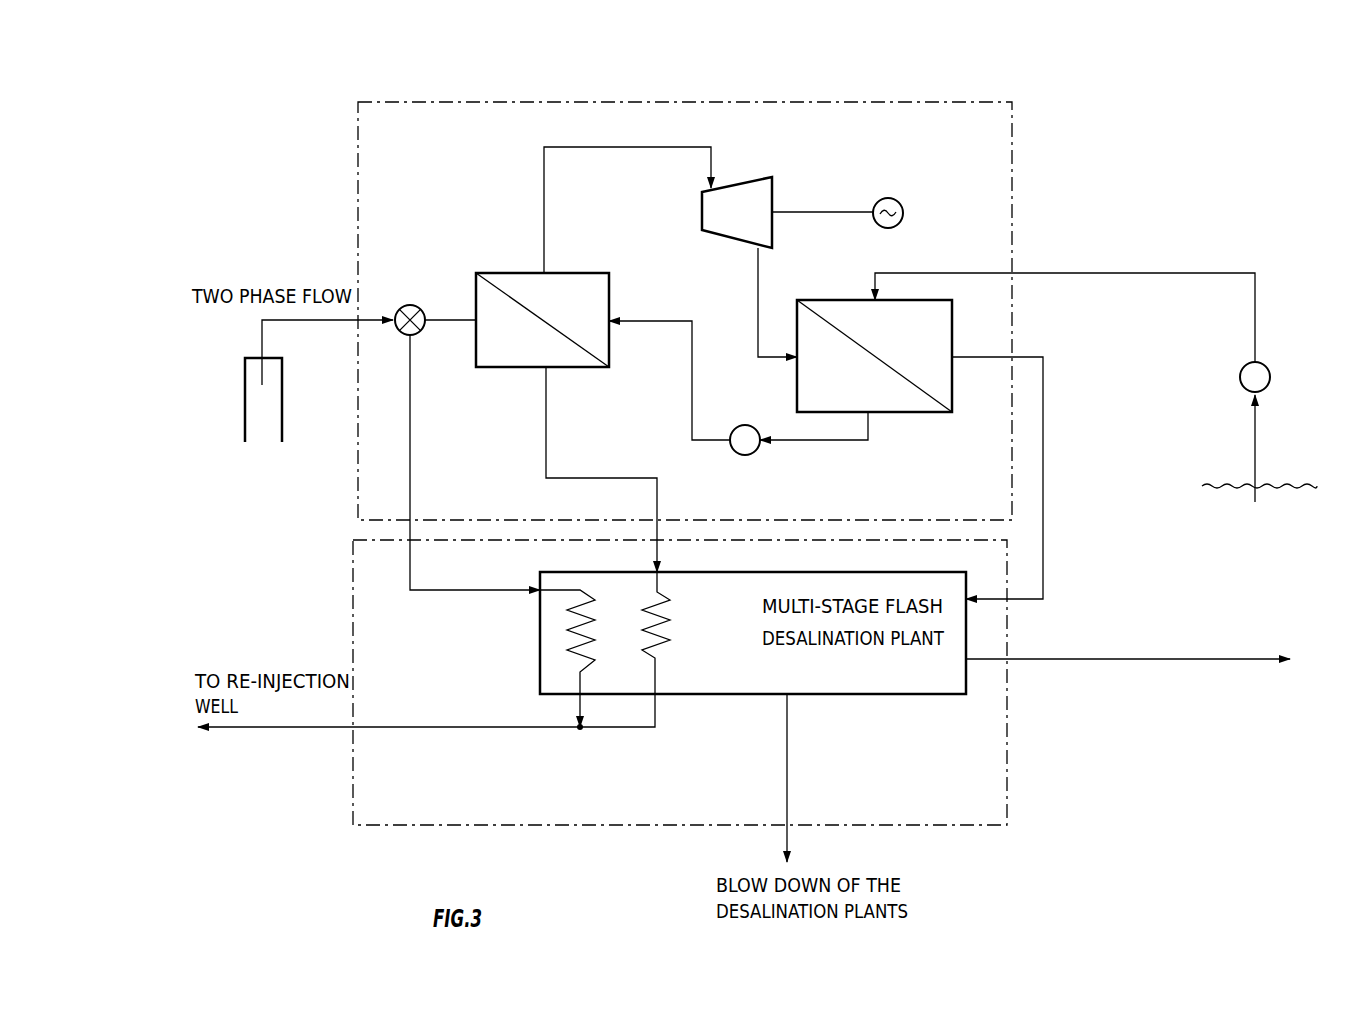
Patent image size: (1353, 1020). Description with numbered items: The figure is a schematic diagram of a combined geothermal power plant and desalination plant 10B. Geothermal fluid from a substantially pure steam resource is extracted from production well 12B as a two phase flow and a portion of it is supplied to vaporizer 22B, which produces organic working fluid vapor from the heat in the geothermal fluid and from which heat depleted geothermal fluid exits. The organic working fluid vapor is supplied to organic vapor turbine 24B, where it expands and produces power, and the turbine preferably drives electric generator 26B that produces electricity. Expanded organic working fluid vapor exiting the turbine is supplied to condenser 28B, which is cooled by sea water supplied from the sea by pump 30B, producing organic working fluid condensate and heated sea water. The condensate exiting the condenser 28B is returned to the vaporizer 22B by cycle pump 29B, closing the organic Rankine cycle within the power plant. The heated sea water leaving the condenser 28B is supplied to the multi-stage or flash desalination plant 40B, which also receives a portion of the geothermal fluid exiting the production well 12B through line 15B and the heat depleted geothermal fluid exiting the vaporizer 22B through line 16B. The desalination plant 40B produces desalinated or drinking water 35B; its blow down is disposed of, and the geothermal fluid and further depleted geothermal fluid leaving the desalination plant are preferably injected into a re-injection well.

The combined geothermal power plant and desalination plant 10B is at (335, 70).
The production well 12B is at (270, 357).
The line 15B is at (427, 590).
The line 16B is at (568, 478).
The vaporizer 22B is at (597, 272).
The organic vapor turbine 24B is at (760, 176).
The electric generator 26B is at (897, 200).
The condenser 28B is at (800, 299).
The cycle pump 29B is at (747, 456).
The pump 30B is at (1240, 378).
The desalinated or drinking water 35B is at (1242, 661).
The multi-stage or flash desalination plant 40B is at (1007, 757).